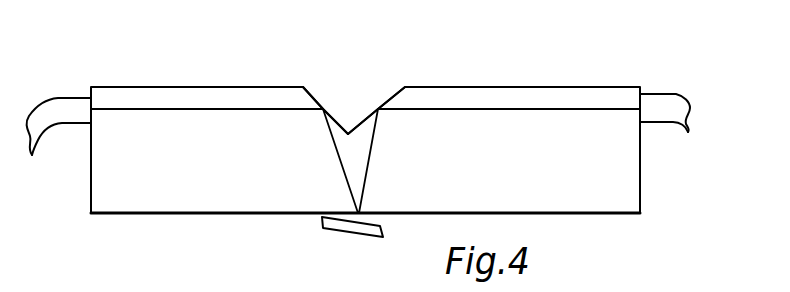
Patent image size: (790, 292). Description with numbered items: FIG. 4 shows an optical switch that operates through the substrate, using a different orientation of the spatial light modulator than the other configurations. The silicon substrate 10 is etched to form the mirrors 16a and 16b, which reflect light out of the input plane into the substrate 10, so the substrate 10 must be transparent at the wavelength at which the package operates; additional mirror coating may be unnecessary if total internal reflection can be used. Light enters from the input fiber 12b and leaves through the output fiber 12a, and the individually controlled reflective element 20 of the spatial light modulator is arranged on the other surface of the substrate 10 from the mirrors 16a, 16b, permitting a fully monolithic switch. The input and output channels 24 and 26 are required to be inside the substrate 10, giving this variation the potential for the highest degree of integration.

The silicon substrate 10 is at (573, 165).
The output fiber 12a is at (657, 102).
The input fiber 12b is at (62, 107).
The mirror 16a is at (382, 102).
The mirror 16b is at (321, 102).
The individually controlled reflective element 20 is at (378, 225).
The input channel 24 is at (223, 100).
The output channel 26 is at (522, 99).